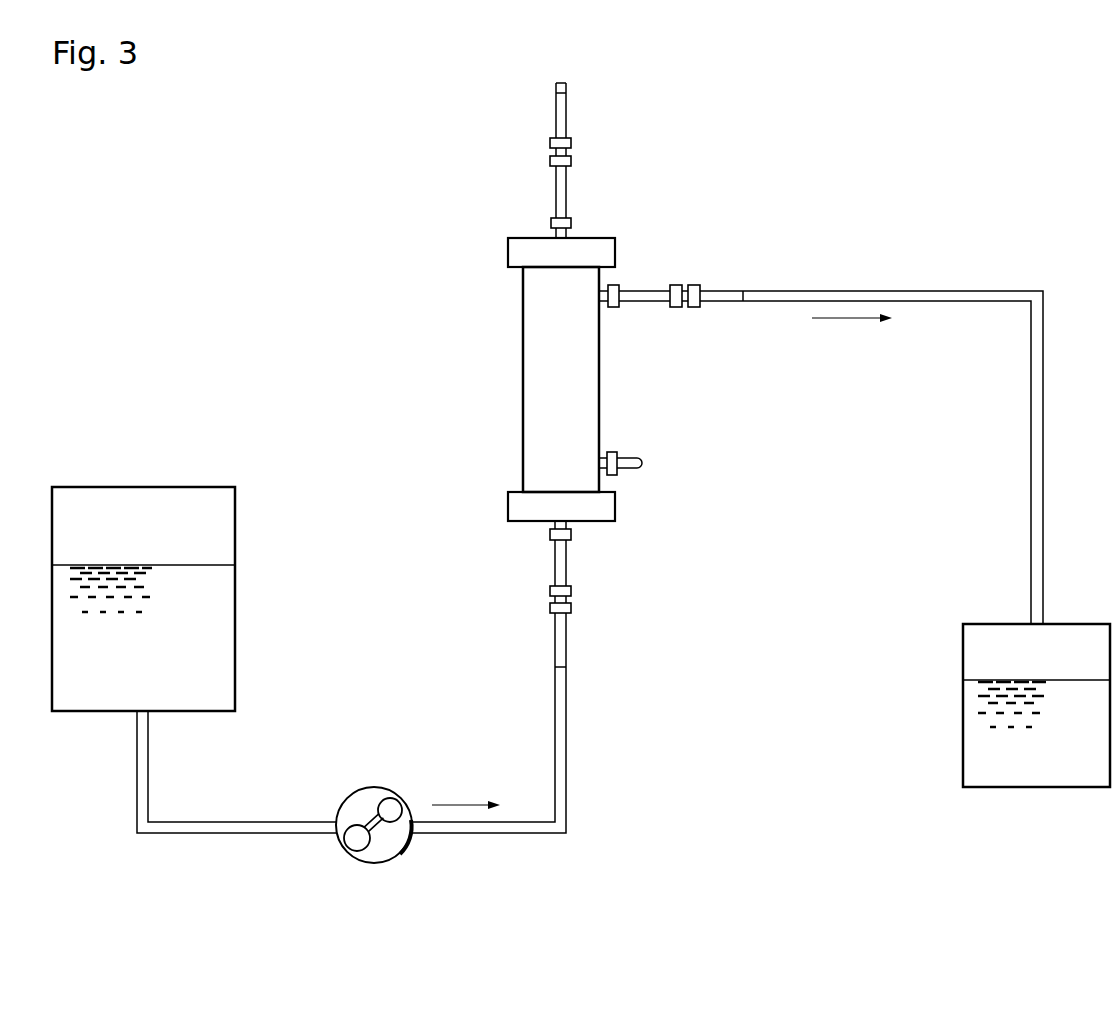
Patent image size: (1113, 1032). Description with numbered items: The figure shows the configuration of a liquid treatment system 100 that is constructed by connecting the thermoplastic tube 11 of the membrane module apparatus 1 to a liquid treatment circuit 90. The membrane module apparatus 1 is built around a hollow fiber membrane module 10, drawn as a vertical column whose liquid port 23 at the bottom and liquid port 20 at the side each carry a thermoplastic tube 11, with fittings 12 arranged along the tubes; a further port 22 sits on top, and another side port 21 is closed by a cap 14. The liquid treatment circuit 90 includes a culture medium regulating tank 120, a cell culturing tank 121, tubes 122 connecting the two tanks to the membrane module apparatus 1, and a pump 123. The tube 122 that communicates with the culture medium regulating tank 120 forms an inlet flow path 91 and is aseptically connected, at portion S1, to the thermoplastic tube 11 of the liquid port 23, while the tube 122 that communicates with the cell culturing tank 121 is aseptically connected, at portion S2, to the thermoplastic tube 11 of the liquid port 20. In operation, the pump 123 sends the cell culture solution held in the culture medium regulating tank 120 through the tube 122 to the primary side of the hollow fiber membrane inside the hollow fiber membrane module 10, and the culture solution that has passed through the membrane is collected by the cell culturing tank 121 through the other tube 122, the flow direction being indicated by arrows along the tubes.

The membrane module apparatus 1 is at (463, 198).
The hollow fiber membrane module 10 is at (508, 255).
The thermoplastic tube 11 is at (567, 128).
The fitting 12 is at (567, 197).
The cap 14 is at (645, 463).
The liquid port 20 is at (612, 308).
The side port 21 is at (612, 451).
The top port 22 is at (572, 224).
The liquid port 23 is at (548, 532).
The liquid treatment circuit 90 is at (795, 288).
The inlet flow path 91 is at (567, 752).
The liquid treatment system 100 is at (783, 162).
The culture medium regulating tank 120 is at (236, 660).
The cell culturing tank 121 is at (962, 735).
The tube 122 is at (858, 290).
The pump 123 is at (410, 848).
The aseptic connection portion S1 is at (567, 665).
The aseptic connection portion S2 is at (745, 303).